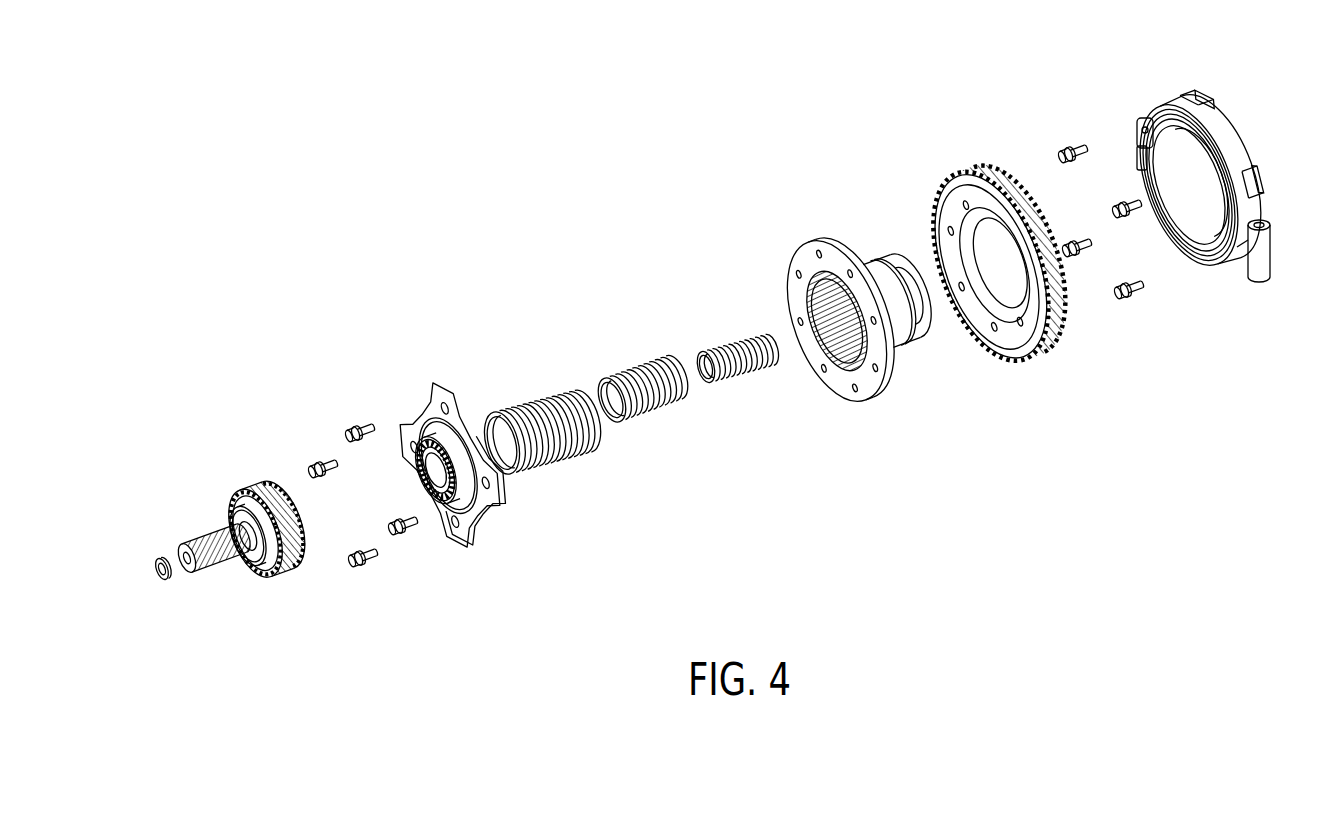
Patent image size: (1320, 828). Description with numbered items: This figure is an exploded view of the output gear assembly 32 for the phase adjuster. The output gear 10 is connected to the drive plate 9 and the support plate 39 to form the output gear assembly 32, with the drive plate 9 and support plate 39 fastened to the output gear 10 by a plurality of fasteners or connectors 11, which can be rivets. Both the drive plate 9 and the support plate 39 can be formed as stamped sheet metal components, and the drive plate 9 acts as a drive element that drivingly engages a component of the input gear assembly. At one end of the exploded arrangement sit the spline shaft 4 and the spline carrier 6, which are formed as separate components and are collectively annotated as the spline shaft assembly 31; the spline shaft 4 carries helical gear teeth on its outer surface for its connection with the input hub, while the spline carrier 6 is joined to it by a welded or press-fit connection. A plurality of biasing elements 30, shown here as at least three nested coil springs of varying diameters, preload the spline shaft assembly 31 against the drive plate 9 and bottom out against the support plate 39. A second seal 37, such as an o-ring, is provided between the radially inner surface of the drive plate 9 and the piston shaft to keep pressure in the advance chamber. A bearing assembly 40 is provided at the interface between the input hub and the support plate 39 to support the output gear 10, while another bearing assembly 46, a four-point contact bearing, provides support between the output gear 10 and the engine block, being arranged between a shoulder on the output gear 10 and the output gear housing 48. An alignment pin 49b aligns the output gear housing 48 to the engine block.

The spline shaft 4 is at (207, 526).
The spline carrier 6 is at (260, 481).
The drive plate 9 is at (815, 257).
The output gear 10 is at (951, 178).
The fastener or connector 11 is at (362, 421).
The biasing elements 30 is at (720, 347).
The spline shaft assembly 31 is at (238, 412).
The output gear assembly 32 is at (565, 209).
The second seal 37 is at (157, 556).
The support plate 39 is at (429, 383).
The bearing assembly 40 is at (465, 548).
The bearing assembly 46 is at (1208, 236).
The output gear housing 48 is at (1170, 107).
The alignment pin 49b is at (1138, 124).